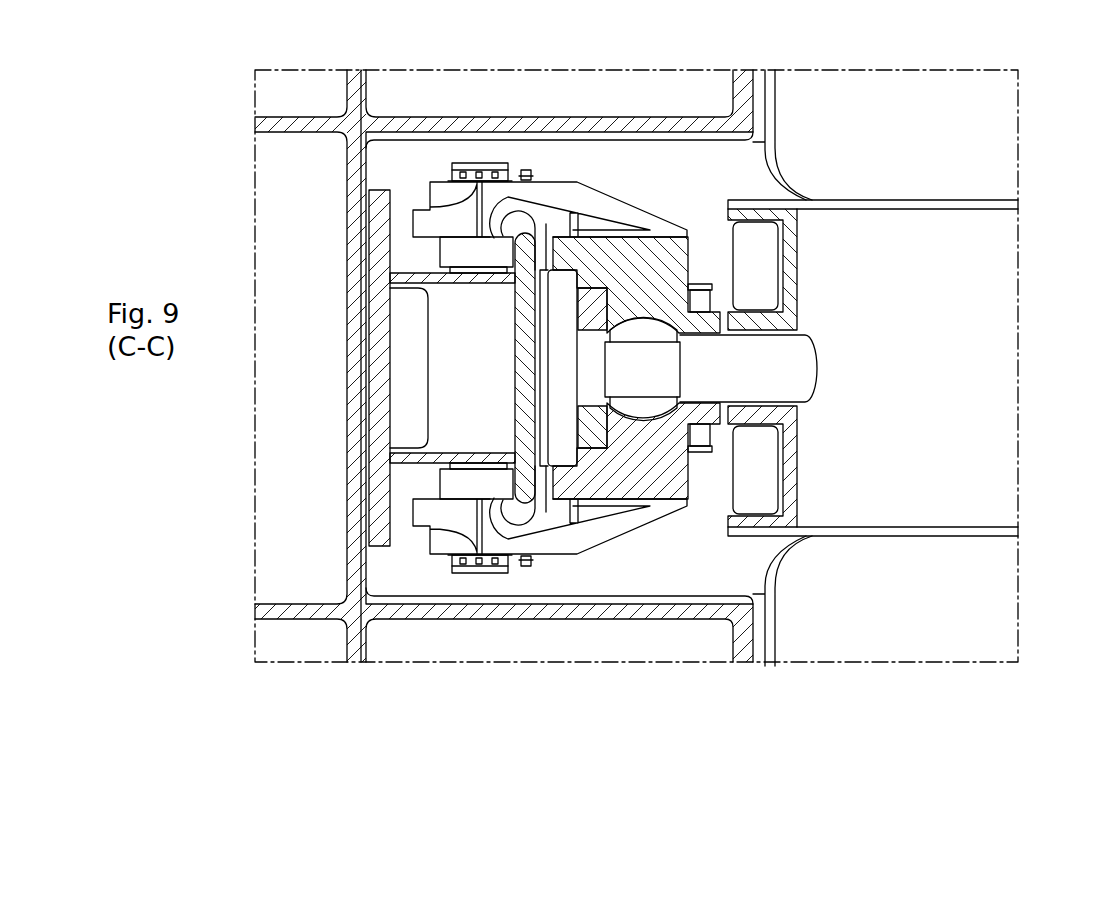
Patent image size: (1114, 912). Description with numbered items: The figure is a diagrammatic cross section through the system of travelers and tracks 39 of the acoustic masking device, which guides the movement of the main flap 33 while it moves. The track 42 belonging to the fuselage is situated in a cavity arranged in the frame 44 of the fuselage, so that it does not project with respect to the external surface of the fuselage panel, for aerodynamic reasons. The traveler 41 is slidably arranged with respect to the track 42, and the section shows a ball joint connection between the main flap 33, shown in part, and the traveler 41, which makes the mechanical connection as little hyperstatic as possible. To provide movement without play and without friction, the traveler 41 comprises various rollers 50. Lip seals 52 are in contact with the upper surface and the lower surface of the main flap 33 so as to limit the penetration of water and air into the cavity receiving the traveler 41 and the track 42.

The system of travelers and tracks 39 is at (1040, 121).
The main flap 33 is at (808, 203).
The traveler 41 is at (623, 267).
The track 42 is at (385, 519).
The frame 44 is at (356, 549).
The rollers 50 is at (452, 245).
The lip seals 52 is at (788, 178).